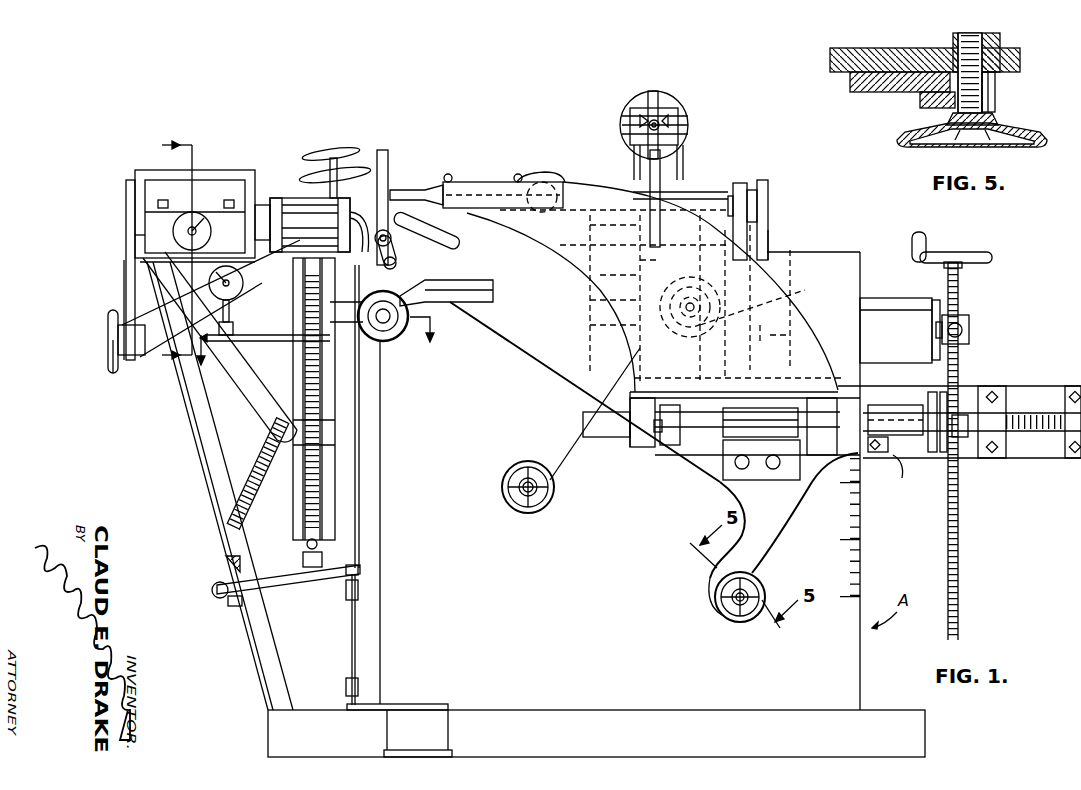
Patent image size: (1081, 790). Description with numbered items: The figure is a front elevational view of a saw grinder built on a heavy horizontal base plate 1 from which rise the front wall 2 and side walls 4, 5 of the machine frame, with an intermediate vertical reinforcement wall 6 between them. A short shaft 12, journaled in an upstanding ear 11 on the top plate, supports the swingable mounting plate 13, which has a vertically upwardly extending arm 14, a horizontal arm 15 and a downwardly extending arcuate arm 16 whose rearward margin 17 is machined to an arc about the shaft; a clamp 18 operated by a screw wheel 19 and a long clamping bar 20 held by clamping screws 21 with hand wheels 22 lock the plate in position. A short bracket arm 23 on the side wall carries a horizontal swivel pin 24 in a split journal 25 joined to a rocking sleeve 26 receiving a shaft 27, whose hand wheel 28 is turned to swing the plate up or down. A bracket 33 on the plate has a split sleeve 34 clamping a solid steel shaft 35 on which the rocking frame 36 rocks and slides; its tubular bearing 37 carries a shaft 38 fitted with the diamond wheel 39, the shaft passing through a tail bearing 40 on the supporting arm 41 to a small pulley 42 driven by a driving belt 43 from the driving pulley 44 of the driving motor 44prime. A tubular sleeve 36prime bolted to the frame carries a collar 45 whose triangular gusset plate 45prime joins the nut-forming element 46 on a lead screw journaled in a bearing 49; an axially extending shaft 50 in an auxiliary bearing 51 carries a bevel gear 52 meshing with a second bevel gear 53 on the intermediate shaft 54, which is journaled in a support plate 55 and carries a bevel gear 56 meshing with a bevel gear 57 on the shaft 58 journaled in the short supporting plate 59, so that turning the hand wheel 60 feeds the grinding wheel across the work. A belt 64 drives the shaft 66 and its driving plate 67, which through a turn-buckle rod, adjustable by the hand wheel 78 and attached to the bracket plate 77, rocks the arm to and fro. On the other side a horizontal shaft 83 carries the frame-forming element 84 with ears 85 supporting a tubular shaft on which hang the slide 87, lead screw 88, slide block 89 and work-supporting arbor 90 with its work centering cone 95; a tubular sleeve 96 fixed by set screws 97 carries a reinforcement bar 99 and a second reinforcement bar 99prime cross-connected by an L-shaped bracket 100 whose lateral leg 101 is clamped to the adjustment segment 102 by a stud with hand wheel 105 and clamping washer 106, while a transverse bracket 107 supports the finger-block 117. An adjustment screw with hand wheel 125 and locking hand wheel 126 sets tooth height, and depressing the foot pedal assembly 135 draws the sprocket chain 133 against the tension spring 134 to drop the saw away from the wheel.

In FIG. 1, the base plate 1 is at (925, 742).
In FIG. 1, the front wall 2 is at (862, 672).
In FIG. 5, the front wall 2 is at (900, 48).
In FIG. 1, the side wall 4 is at (863, 540).
In FIG. 1, the side wall 5 is at (382, 528).
In FIG. 1, the intermediate vertical reinforcement wall 6 is at (167, 248).
In FIG. 1, the upstanding ear 11 is at (320, 352).
In FIG. 1, the short shaft 12 is at (410, 185).
In FIG. 1, the swingable mounting plate 13 is at (532, 355).
In FIG. 1, the vertically upwardly extending arm 14 is at (675, 185).
In FIG. 1, the horizontal arm 15 is at (1040, 460).
In FIG. 1, the arcuate arm 16 is at (708, 588).
In FIG. 5, the arcuate arm 16 is at (870, 92).
In FIG. 1, the arcuate rearward margin 17 is at (790, 528).
In FIG. 5, the arcuate rearward margin 17 is at (957, 33).
In FIG. 1, the clamp 18 is at (728, 600).
In FIG. 5, the clamp 18 is at (996, 105).
In FIG. 1, the screw wheel 19 is at (740, 622).
In FIG. 5, the screw wheel 19 is at (1045, 137).
In FIG. 1, the long clamping bar 20 is at (565, 468).
In FIG. 1, the clamping screw 21 is at (680, 330).
In FIG. 1, the hand wheel 22 is at (695, 335).
In FIG. 1, the short bracket arm 23 is at (878, 300).
In FIG. 1, the horizontal swivel pin 24 is at (970, 322).
In FIG. 1, the split journal 25 is at (965, 318).
In FIG. 1, the rocking sleeve 26 is at (970, 340).
In FIG. 1, the shaft 27 is at (962, 285).
In FIG. 1, the hand wheel 28 is at (985, 252).
In FIG. 1, the bracket 33 is at (722, 480).
In FIG. 1, the split sleeve 34 is at (755, 408).
In FIG. 1, the solid steel shaft 35 is at (615, 440).
In FIG. 1, the rocking frame 36 is at (600, 300).
In FIG. 1, the tubular sleeve 36prime is at (935, 392).
In FIG. 1, the tubular bearing 37 is at (430, 185).
In FIG. 1, the shaft 38 is at (388, 190).
In FIG. 1, the diamond wheel 39 is at (382, 150).
In FIG. 1, the tail bearing 40 is at (742, 183).
In FIG. 1, the supporting arm 41 is at (757, 212).
In FIG. 1, the small pulley 42 is at (768, 190).
In FIG. 1, the driving belt 43 is at (768, 233).
In FIG. 1, the driving pulley 44 is at (775, 340).
In FIG. 1, the driving motor 44prime is at (761, 301).
In FIG. 1, the collar 45 is at (870, 452).
In FIG. 1, the triangular gusset plate 45prime is at (888, 405).
In FIG. 1, the nut-forming element 46 is at (955, 445).
In FIG. 1, the bearing 49 is at (903, 477).
In FIG. 1, the axially extending shaft 50 is at (1032, 410).
In FIG. 1, the auxiliary bearing 51 is at (672, 445).
In FIG. 1, the bevel gear 52 is at (645, 448).
In FIG. 1, the second bevel gear 53 is at (638, 448).
In FIG. 1, the intermediate shaft 54 is at (640, 270).
In FIG. 1, the support plate 55 is at (630, 150).
In FIG. 1, the bevel gear 56 is at (670, 127).
In FIG. 1, the bevel gear 57 is at (642, 108).
In FIG. 1, the shaft 58 is at (680, 118).
In FIG. 1, the short supporting plate 59 is at (668, 108).
In FIG. 1, the hand wheel 60 is at (665, 115).
In FIG. 1, the belt 64 is at (725, 240).
In FIG. 1, the shaft 66 is at (700, 240).
In FIG. 1, the driving plate 67 is at (548, 270).
In FIG. 1, the bracket plate 77 is at (516, 174).
In FIG. 1, the hand wheel 78 is at (548, 170).
In FIG. 1, the horizontal shaft 83 is at (126, 280).
In FIG. 1, the frame-forming element 84 is at (208, 182).
In FIG. 1, the ear 85 is at (258, 180).
In FIG. 1, the slide 87 is at (335, 455).
In FIG. 1, the lead screw 88 is at (300, 490).
In FIG. 1, the slide block 89 is at (336, 330).
In FIG. 1, the work-supporting arbor 90 is at (420, 288).
In FIG. 1, the work centering cone 95 is at (390, 340).
In FIG. 1, the tubular sleeve 96 is at (135, 237).
In FIG. 1, the set screw 97 is at (190, 196).
In FIG. 1, the reinforcement bar 99 is at (232, 388).
In FIG. 1, the reinforcement bar 99prime is at (258, 288).
In FIG. 1, the L-shaped bracket 100 is at (118, 336).
In FIG. 1, the lateral leg 101 is at (150, 360).
In FIG. 1, the adjustment segment 102 is at (124, 298).
In FIG. 1, the hand wheel 105 is at (108, 355).
In FIG. 1, the clamping washer 106 is at (116, 372).
In FIG. 1, the transverse bracket 107 is at (283, 198).
In FIG. 1, the finger-block 117 is at (362, 255).
In FIG. 1, the hand wheel 125 is at (328, 146).
In FIG. 1, the locking hand wheel 126 is at (345, 165).
In FIG. 1, the sprocket chain 133 is at (362, 490).
In FIG. 1, the tension spring 134 is at (268, 462).
In FIG. 1, the foot pedal assembly 135 is at (360, 625).